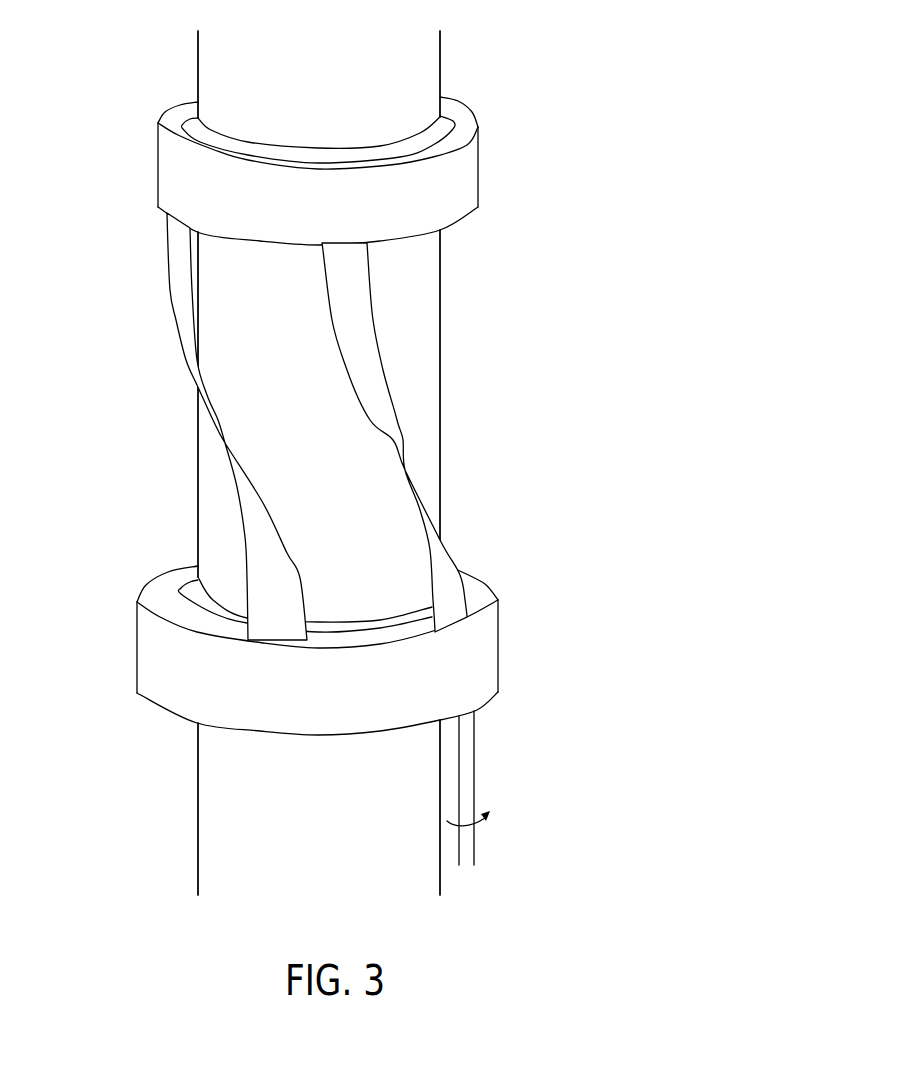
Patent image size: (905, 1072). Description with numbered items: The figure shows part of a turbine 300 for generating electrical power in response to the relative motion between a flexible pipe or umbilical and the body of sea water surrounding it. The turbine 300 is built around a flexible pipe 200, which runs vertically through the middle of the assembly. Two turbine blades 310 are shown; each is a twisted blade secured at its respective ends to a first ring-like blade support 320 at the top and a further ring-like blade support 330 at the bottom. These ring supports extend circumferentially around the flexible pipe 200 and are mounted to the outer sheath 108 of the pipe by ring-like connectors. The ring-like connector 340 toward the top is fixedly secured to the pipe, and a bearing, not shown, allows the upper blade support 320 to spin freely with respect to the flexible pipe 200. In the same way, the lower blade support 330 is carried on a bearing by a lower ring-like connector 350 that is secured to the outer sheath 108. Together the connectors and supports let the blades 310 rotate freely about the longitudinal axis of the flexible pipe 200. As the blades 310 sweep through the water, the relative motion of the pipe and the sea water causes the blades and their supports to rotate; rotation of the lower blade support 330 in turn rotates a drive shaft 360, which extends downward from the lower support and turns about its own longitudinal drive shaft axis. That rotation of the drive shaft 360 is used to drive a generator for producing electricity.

The flexible pipe 200 is at (420, 58).
The outer sheath 108 is at (390, 450).
The turbine 300 is at (635, 188).
The turbine blades 310 is at (182, 317).
The first ring-like blade support 320 is at (172, 177).
The further ring-like blade support 330 is at (482, 668).
The ring-like connector 340 is at (192, 128).
The lower ring-like connector 350 is at (185, 594).
The drive shaft 360 is at (467, 772).